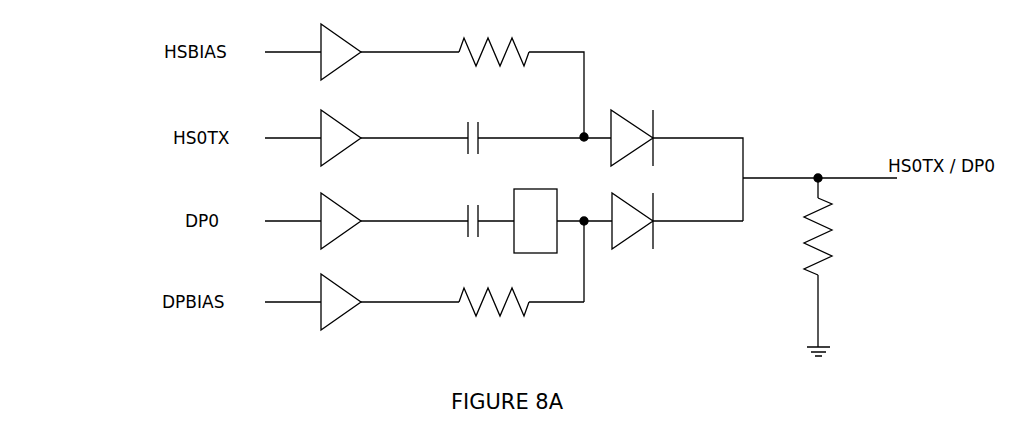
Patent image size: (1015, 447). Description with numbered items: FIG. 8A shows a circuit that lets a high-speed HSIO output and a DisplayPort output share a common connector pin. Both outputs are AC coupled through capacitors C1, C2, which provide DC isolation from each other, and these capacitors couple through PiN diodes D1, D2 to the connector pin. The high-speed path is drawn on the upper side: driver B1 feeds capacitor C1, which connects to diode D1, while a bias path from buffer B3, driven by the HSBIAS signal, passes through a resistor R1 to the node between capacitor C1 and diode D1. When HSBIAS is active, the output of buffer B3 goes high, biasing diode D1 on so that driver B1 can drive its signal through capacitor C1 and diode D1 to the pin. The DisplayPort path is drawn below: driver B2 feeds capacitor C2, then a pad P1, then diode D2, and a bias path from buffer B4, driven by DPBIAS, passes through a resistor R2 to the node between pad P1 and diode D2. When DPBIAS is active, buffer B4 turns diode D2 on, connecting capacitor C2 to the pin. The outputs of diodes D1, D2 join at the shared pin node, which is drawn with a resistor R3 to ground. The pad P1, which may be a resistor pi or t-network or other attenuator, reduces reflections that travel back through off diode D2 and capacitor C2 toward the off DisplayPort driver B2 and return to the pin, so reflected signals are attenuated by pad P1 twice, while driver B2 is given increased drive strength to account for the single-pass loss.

The driver B1 is at (352, 137).
The DisplayPort driver B2 is at (352, 220).
The buffer B3 is at (352, 51).
The buffer B4 is at (352, 301).
The resistor R1 is at (513, 40).
The resistor R2 is at (494, 290).
The resistor R3 is at (834, 236).
The capacitor C1 is at (466, 126).
The capacitor C2 is at (466, 207).
The PiN diode D1 is at (632, 129).
The PiN diode D2 is at (632, 235).
The pad P1 is at (535, 221).